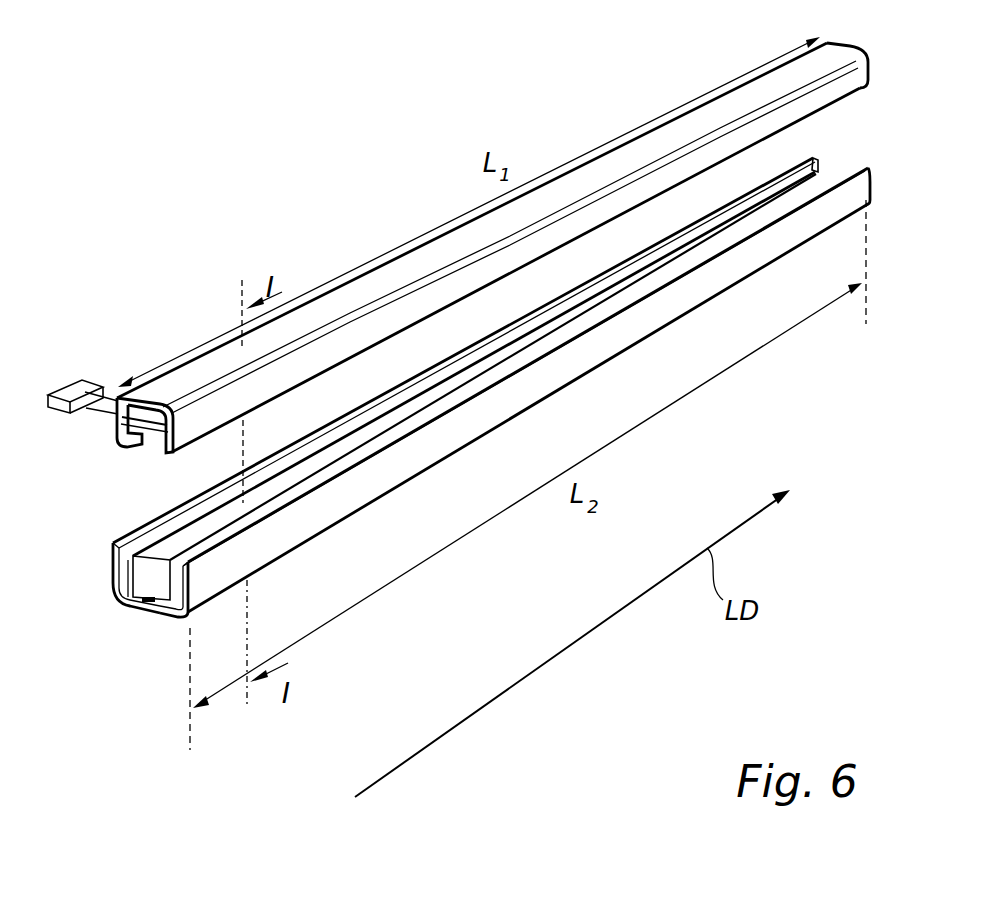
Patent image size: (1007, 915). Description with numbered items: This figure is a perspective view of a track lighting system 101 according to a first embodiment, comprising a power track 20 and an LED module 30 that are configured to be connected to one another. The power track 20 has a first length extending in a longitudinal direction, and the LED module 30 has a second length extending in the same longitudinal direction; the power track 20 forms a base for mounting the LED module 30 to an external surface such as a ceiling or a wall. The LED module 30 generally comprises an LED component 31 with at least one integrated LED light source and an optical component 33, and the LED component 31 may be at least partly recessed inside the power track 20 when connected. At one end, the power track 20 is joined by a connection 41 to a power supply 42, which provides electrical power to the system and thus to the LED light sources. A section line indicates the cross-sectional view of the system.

The lighting assembly 101 is at (172, 270).
The power track 20 is at (642, 150).
The LED module 30 is at (119, 640).
The LED component 31 is at (773, 207).
The optical component 33 is at (760, 250).
The connection 41 is at (100, 410).
The power supply 42 is at (76, 390).